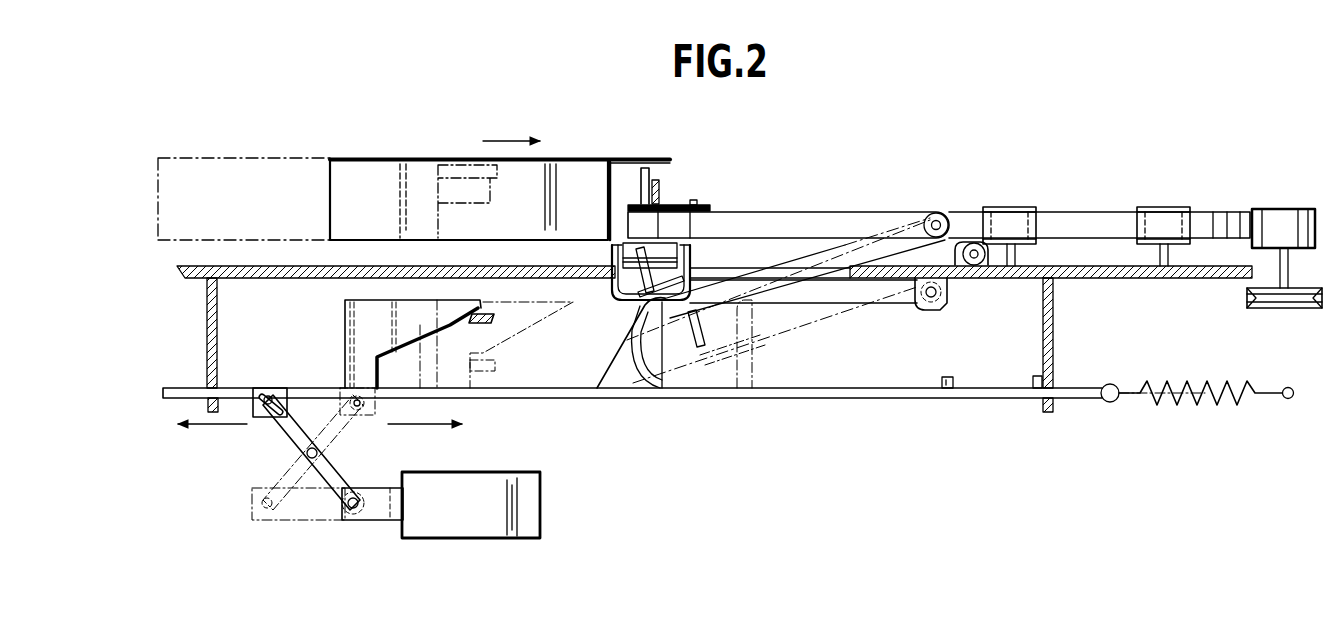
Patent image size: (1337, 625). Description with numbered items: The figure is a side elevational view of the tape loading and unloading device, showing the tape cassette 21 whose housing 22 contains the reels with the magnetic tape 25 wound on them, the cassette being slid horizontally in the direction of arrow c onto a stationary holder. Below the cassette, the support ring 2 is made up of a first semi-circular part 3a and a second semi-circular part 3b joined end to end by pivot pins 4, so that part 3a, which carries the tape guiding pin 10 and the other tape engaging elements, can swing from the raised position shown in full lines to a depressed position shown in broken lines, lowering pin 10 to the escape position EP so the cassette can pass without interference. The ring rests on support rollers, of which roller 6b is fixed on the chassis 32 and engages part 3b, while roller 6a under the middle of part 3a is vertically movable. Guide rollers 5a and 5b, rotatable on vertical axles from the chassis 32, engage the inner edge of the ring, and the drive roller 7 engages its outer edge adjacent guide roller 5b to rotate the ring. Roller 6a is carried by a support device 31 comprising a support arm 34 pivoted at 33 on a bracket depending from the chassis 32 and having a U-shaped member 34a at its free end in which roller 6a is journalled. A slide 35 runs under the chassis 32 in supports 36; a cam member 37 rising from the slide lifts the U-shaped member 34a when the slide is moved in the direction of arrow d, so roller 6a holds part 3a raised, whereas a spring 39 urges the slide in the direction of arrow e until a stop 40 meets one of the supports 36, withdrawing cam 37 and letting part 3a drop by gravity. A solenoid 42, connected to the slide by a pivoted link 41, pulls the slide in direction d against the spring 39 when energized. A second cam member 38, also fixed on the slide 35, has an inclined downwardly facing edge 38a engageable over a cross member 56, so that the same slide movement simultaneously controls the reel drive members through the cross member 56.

The housing 22 is at (355, 167).
The tape cassette 21 is at (585, 157).
The magnetic tape 25 is at (665, 188).
The tape guiding pin 10 is at (641, 186).
The first semi-circular part 3a is at (841, 222).
The pivot pins 4 is at (937, 212).
The support roller 6b is at (972, 242).
The guide roller 5a is at (1018, 207).
The second semi-circular part 3b is at (1090, 222).
The guide roller 5b is at (1172, 209).
The support ring 2 is at (1232, 212).
The drive roller 7 is at (1290, 213).
The chassis 32 is at (1088, 279).
The supports 36 is at (207, 324).
The slide 35 is at (879, 393).
The stop 40 is at (953, 382).
The spring 39 is at (1213, 391).
The cam member 38 is at (367, 323).
The inclined edge 38a is at (427, 348).
The cross member 56 is at (491, 324).
The U-shaped member 34a is at (636, 288).
The support roller 6a is at (678, 258).
The support arm 34 is at (865, 293).
The pivot 33 is at (934, 306).
The cam member 37 is at (617, 363).
The support device 31 is at (716, 322).
The pivoted link 41 is at (338, 472).
The solenoid 42 is at (497, 475).
The arrow c is at (505, 142).
The arrow d is at (236, 424).
The arrow e is at (423, 424).
The escape position EP is at (598, 286).